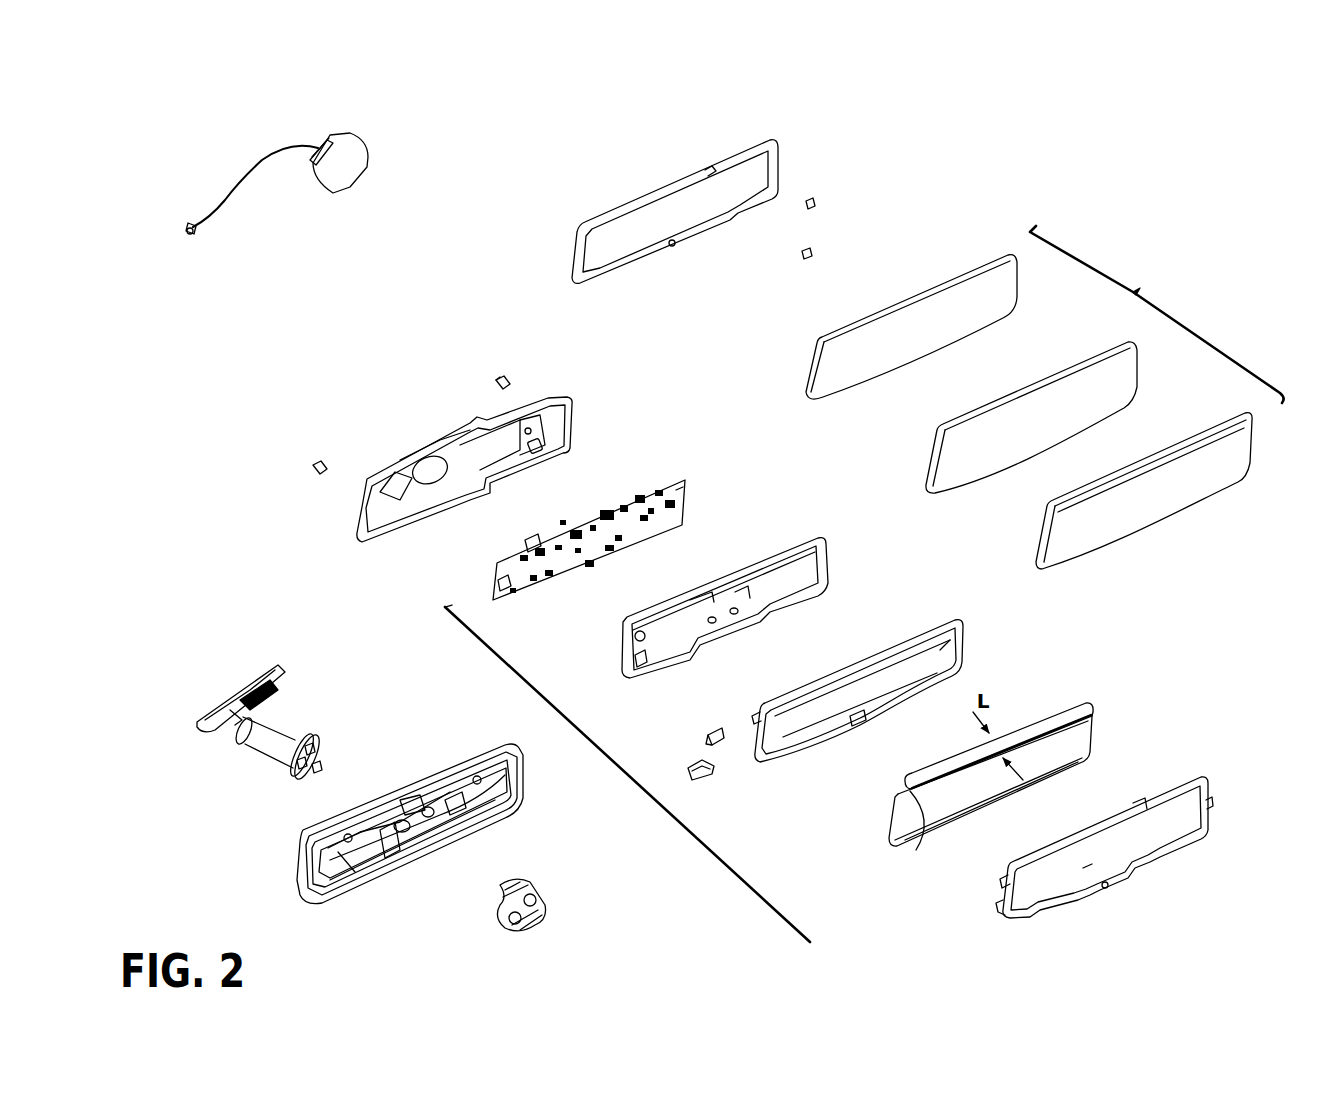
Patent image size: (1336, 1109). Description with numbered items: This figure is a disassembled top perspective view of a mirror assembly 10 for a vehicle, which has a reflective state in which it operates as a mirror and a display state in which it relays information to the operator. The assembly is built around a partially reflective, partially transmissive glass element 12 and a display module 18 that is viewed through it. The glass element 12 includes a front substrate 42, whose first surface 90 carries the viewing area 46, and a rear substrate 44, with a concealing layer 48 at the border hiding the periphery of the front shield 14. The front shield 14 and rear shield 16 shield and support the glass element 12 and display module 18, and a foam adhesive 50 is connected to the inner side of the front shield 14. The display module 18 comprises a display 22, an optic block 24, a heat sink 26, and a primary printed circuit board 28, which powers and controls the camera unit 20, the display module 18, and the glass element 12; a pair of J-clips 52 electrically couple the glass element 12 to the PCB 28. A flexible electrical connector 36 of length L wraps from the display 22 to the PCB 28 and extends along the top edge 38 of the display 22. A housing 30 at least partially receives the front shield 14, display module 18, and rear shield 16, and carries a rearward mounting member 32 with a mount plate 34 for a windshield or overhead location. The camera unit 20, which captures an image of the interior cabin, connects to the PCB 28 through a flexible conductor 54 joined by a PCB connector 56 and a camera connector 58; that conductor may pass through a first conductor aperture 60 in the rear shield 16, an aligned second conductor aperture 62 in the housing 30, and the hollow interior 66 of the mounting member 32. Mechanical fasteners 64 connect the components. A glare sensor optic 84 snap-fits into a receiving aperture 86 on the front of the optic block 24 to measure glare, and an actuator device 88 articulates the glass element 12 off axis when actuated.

The mirror assembly 10 is at (1157, 223).
The partially reflective, partially transmissive element 12 is at (1157, 314).
The front shield 14 is at (1185, 780).
The rear shield 16 is at (500, 433).
The display module 18 is at (604, 748).
The camera unit 20 is at (352, 150).
The display 22 is at (893, 820).
The optic block 24 is at (883, 678).
The heat sink 26 is at (822, 600).
The primary printed circuit board 28 is at (682, 476).
The housing 30 is at (300, 870).
The mounting member 32 is at (283, 754).
The mount plate 34 is at (232, 692).
The flexible electrical connector 36 is at (956, 777).
The top edge 38 is at (916, 850).
The front substrate 42 is at (1225, 478).
The rear substrate 44 is at (950, 278).
The viewing area 46 is at (1158, 515).
The concealing layer 48 is at (1058, 370).
The foam adhesive 50 is at (776, 170).
The J-clips 52 is at (812, 252).
The flexible conductor 54 is at (262, 160).
The PCB connector 56 is at (190, 224).
The camera connector 58 is at (322, 145).
The first conductor aperture 60 is at (540, 428).
The second conductor aperture 62 is at (476, 776).
The mechanical fasteners 64 is at (505, 380).
The hollow interior 66 is at (330, 745).
The glare sensor optic 84 is at (708, 738).
The receiving aperture 86 is at (858, 727).
The actuator device 88 is at (704, 775).
The first surface 90 is at (941, 650).